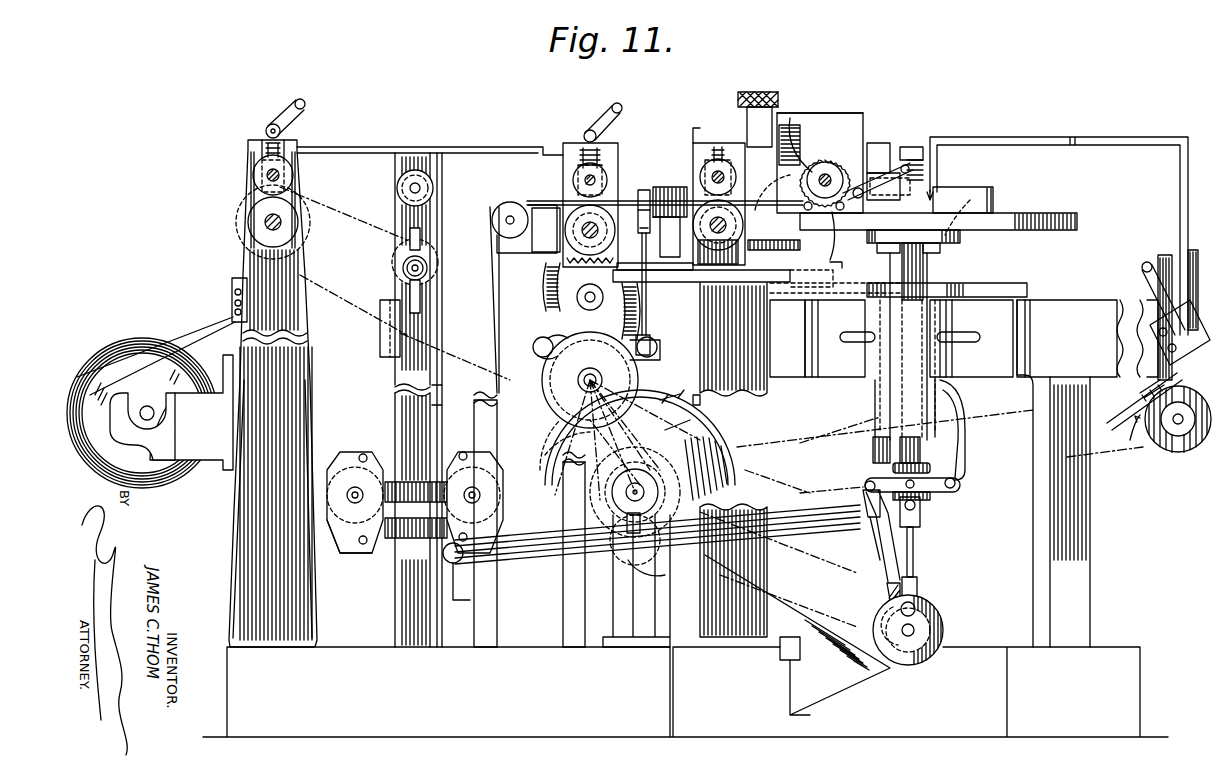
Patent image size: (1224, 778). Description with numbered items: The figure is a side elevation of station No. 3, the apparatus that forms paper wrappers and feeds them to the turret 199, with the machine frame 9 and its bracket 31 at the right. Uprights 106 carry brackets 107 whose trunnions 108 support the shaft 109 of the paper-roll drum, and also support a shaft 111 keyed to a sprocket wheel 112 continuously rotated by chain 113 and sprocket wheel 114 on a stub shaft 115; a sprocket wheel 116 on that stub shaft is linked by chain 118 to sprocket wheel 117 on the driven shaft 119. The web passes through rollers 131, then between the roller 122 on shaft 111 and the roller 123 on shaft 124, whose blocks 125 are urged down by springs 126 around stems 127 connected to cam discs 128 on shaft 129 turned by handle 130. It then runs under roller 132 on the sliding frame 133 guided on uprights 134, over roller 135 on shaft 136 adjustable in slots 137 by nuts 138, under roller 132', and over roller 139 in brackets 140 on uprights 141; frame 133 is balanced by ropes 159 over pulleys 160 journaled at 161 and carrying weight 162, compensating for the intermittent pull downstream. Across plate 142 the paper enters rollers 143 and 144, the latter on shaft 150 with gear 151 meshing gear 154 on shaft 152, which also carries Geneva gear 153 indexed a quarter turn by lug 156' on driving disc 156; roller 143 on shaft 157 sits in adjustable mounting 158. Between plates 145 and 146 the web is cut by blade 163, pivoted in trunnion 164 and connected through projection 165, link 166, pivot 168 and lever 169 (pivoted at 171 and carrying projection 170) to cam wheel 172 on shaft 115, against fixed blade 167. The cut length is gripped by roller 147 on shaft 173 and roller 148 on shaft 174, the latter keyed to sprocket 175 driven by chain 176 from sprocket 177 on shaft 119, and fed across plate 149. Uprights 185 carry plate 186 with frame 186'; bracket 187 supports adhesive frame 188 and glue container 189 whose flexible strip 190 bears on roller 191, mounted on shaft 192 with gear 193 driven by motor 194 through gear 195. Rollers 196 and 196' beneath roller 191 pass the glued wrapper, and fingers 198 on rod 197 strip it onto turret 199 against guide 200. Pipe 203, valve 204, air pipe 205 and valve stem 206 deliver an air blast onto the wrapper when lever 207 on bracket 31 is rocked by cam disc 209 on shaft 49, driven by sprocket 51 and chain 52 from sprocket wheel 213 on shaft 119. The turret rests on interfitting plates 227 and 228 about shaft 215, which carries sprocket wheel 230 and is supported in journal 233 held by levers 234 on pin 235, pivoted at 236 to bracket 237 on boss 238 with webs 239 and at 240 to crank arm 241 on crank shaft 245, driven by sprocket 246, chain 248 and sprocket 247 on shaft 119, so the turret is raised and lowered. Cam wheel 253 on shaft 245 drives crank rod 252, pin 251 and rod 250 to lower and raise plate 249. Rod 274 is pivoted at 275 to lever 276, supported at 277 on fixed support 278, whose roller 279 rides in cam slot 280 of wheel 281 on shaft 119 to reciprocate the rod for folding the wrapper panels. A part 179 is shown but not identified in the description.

The station No. 3 is at (798, 84).
The frame 9 is at (1035, 312).
The bracket 31 is at (1147, 256).
The shaft 49 is at (1150, 445).
The sprocket wheel 51 is at (1176, 430).
The chain 52 is at (1060, 480).
The uprights 106 is at (245, 545).
The brackets 107 is at (205, 450).
The trunnions 108 is at (138, 418).
The shaft 109 is at (155, 414).
The shaft 111 is at (267, 226).
The sprocket wheel 112 is at (236, 220).
The sprocket chain 113 is at (331, 206).
The sprocket wheel 114 is at (545, 440).
The stub shaft 115 is at (602, 380).
The sprocket wheel 116 is at (540, 458).
The sprocket wheel 117 is at (645, 495).
The chain 118 is at (616, 492).
The shaft 119 is at (658, 490).
The roller 122 is at (255, 212).
The roller 123 is at (255, 176).
The shaft 124 is at (267, 174).
The blocks 125 is at (285, 175).
The springs 126 is at (282, 150).
The stems 127 is at (284, 143).
The cam discs 128 is at (266, 133).
The shaft 129 is at (270, 128).
The handle 130 is at (298, 99).
The rollers 131 is at (233, 297).
The roller 132 is at (352, 499).
The roller 132' is at (473, 493).
The frame 133 is at (366, 548).
The uprights 134 is at (398, 583).
The roller 135 is at (405, 262).
The shaft 136 is at (405, 280).
The slots 137 is at (395, 258).
The nuts 138 is at (428, 268).
The roller 139 is at (506, 207).
The brackets 140 is at (497, 221).
The uprights 141 is at (563, 612).
The plate 142 is at (540, 201).
The roller 143 is at (598, 165).
The roller 144 is at (567, 226).
The plate 145 is at (640, 196).
The plate 146 is at (698, 160).
The roller 147 is at (714, 158).
The roller 148 is at (735, 245).
The plate 149 is at (764, 192).
The shaft 150 is at (582, 231).
The gear wheel 151 is at (576, 243).
The shaft 152 is at (580, 302).
The Geneva gear 153 is at (578, 304).
The gear 154 is at (545, 288).
The Geneva driving disc 156 is at (665, 355).
The lug 156' is at (662, 344).
The shaft 157 is at (575, 160).
The adjustable mounting 158 is at (580, 130).
The cables 159 is at (441, 326).
The pulleys 160 is at (422, 180).
The journal 161 is at (417, 186).
The weight 162 is at (380, 340).
The cutting blade 163 is at (656, 186).
The trunnion 164 is at (668, 187).
The projection 165 is at (638, 213).
The link 166 is at (640, 230).
The blade 167 is at (656, 219).
The pivot 168 is at (657, 350).
The lever 169 is at (540, 360).
The projection 170 is at (464, 360).
The pivot 171 is at (533, 348).
The cam wheel 172 is at (545, 405).
The shaft 173 is at (720, 170).
The shaft 174 is at (726, 228).
The sprocket wheel 175 is at (750, 240).
The chain 176 is at (700, 402).
The sprocket wheel 177 is at (612, 530).
The fork support 179 is at (613, 613).
The uprights 185 is at (740, 340).
The plate 186 is at (756, 282).
The frame 186' is at (679, 123).
The bracket 187 is at (780, 130).
The adhesive applying frame 188 is at (870, 143).
The glue container 189 is at (805, 140).
The flexible strip 190 is at (808, 180).
The roller 191 is at (878, 173).
The shaft 192 is at (880, 160).
The gear 193 is at (850, 140).
The electric motor 194 is at (822, 282).
The gear 195 is at (800, 245).
The roller 196 is at (843, 241).
The roller 196' is at (831, 233).
The rod 197 is at (932, 188).
The fingers 198 is at (912, 147).
The turret 199 is at (990, 218).
The stop or guide 200 is at (993, 192).
The pipe 203 is at (1035, 137).
The valve 204 is at (1158, 345).
The pipe 205 is at (1140, 272).
The stem 206 is at (1165, 360).
The lever 207 is at (1140, 385).
The cam disc 209 is at (1130, 452).
The sprocket wheel 213 is at (705, 430).
The shaft 215 is at (925, 280).
The plate 227 is at (960, 236).
The plate 228 is at (960, 248).
The sprocket wheel 230 is at (950, 292).
The journal 233 is at (930, 465).
The levers 234 is at (930, 495).
The pivot pin 235 is at (950, 470).
The pivot 236 is at (955, 488).
The bracket 237 is at (945, 420).
The elongated boss 238 is at (855, 395).
The webs 239 is at (840, 345).
The pivot 240 is at (863, 486).
The crank arm 241 is at (882, 578).
The crank shaft 245 is at (915, 630).
The sprocket wheel 246 is at (893, 670).
The sprocket wheel 247 is at (668, 568).
The chain 248 is at (800, 600).
The plate 249 is at (965, 201).
The rod 250 is at (920, 305).
The pin 251 is at (920, 515).
The crank rod 252 is at (913, 553).
The cam wheel 253 is at (935, 655).
The rod 274 is at (870, 452).
The pivot 275 is at (877, 548).
The lever 276 is at (505, 560).
The pivot 277 is at (458, 562).
The fixed support 278 is at (462, 612).
The roller 279 is at (655, 580).
The cam slot 280 is at (737, 460).
The wheel 281 is at (740, 478).